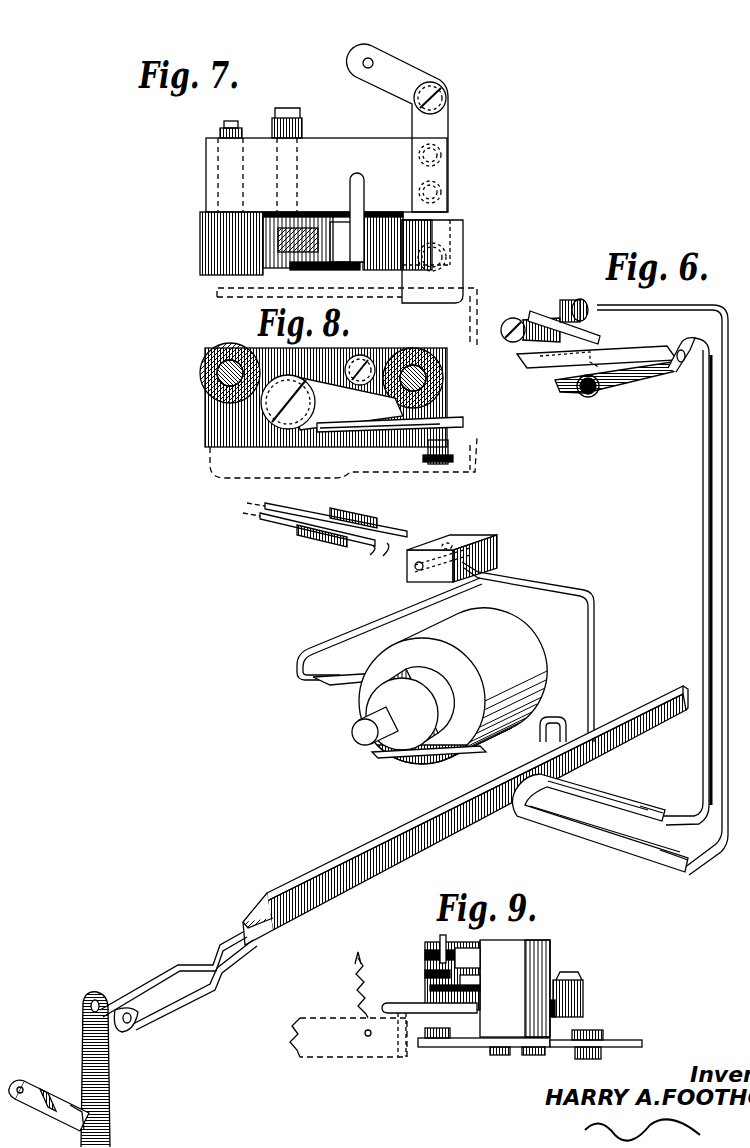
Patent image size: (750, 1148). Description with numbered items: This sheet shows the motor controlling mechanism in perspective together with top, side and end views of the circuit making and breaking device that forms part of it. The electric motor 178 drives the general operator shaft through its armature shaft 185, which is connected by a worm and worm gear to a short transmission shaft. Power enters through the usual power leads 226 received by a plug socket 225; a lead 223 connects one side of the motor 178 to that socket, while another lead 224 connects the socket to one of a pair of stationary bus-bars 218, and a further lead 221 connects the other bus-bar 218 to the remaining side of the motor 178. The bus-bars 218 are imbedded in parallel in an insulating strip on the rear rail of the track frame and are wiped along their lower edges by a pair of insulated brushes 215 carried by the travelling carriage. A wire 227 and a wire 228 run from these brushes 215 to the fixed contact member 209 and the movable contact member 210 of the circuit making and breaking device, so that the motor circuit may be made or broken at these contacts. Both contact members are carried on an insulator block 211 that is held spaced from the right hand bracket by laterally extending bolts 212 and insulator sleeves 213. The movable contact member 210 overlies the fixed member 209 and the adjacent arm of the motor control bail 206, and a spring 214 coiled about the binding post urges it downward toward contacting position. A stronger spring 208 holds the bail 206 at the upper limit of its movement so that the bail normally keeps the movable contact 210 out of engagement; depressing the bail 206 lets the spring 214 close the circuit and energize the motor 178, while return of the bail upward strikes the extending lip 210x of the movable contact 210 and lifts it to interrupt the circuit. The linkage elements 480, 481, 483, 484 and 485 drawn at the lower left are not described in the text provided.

In FIG. 6, the electric motor 178 is at (503, 628).
In FIG. 6, the armature shaft 185 is at (357, 737).
In FIG. 7, the motor control bail 206 is at (335, 292).
In FIG. 8, the motor control bail 206 is at (478, 478).
In FIG. 9, the motor control bail 206 is at (362, 1021).
In FIG. 9, the spring 208 is at (352, 988).
In FIG. 7, the fixed contact member 209 is at (440, 216).
In FIG. 8, the fixed contact member 209 is at (447, 448).
In FIG. 6, the fixed contact member 209 is at (640, 388).
In FIG. 9, the fixed contact member 209 is at (447, 1049).
In FIG. 7, the movable contact member 210 is at (463, 241).
In FIG. 8, the movable contact member 210 is at (450, 420).
In FIG. 6, the movable contact member 210 is at (604, 338).
In FIG. 9, the movable contact member 210 is at (412, 1006).
In FIG. 7, the extending lip 210x is at (454, 319).
In FIG. 6, the extending lip 210x is at (580, 390).
In FIG. 9, the extending lip 210x is at (397, 1063).
In FIG. 7, the insulator block 211 is at (206, 170).
In FIG. 8, the insulator block 211 is at (205, 413).
In FIG. 9, the insulator block 211 is at (547, 1023).
In FIG. 7, the bolts 212 is at (240, 128).
In FIG. 8, the bolts 212 is at (225, 349).
In FIG. 7, the insulator sleeves 213 is at (200, 254).
In FIG. 8, the insulator sleeves 213 is at (203, 371).
In FIG. 9, the insulator sleeves 213 is at (480, 953).
In FIG. 7, the spring 214 is at (292, 214).
In FIG. 8, the spring 214 is at (372, 349).
In FIG. 6, the spring 214 is at (535, 312).
In FIG. 9, the spring 214 is at (440, 939).
In FIG. 6, the brushes 215 is at (563, 827).
In FIG. 6, the bus-bars 218 is at (384, 841).
In FIG. 6, the lead 221 is at (548, 718).
In FIG. 6, the lead 223 is at (378, 616).
In FIG. 6, the lead 224 is at (597, 600).
In FIG. 6, the plug socket 225 is at (484, 537).
In FIG. 6, the power leads 226 is at (378, 551).
In FIG. 6, the wire 227 is at (703, 516).
In FIG. 6, the wire 228 is at (720, 476).
In FIG. 6, the link 480 is at (126, 1044).
In FIG. 6, the lever 481 is at (110, 1095).
In FIG. 6, the connecting rod 483 is at (197, 1004).
In FIG. 6, the connecting rod 484 is at (143, 989).
In FIG. 6, the clevis fitting 485 is at (42, 1088).